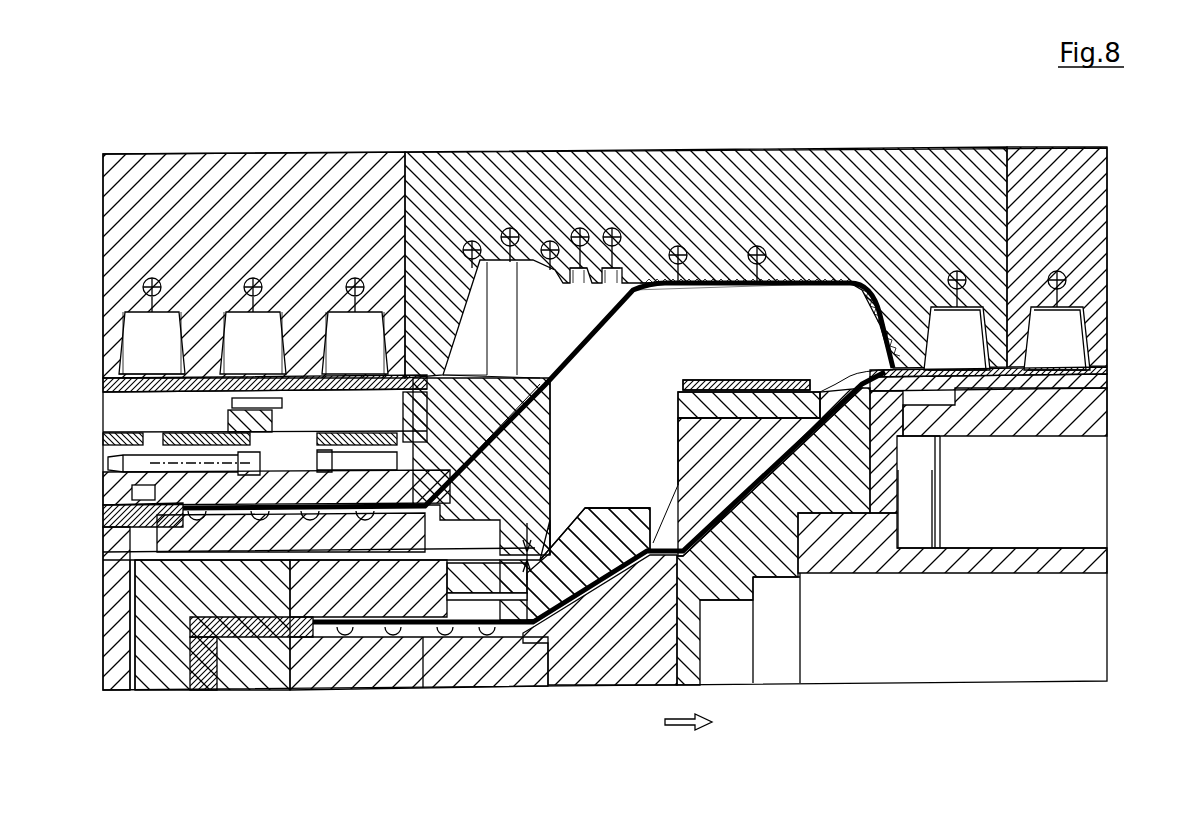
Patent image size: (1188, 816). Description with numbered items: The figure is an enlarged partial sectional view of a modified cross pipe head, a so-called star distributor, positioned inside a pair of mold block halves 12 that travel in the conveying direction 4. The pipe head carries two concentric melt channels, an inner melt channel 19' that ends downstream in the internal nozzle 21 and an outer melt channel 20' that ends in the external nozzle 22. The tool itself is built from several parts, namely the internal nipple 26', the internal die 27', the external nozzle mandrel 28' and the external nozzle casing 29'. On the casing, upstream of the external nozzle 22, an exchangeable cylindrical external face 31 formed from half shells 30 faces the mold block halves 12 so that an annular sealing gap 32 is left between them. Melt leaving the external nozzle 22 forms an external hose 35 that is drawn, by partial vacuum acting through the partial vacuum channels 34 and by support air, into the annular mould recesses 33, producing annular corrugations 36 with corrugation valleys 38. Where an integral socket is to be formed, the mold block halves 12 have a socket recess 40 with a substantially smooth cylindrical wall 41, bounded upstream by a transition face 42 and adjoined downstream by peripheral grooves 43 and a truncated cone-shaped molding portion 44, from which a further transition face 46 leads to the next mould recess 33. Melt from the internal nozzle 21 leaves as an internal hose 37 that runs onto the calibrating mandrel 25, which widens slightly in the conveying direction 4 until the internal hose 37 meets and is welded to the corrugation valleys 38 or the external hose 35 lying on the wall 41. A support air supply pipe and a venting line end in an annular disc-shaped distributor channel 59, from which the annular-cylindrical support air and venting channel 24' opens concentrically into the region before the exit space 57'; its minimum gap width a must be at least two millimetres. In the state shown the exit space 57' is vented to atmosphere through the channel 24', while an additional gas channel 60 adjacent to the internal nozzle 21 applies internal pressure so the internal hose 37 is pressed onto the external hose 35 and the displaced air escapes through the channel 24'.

The mold block half 12 is at (697, 175).
The annular mould recess 33 is at (152, 278).
The partial vacuum channel 34 is at (1060, 270).
The annular corrugation 36 is at (1098, 320).
The corrugation valley 38 is at (1100, 370).
The calibrating mandrel 25 is at (1090, 410).
The internal nozzle 21 is at (905, 440).
The additional gas channel 60 is at (870, 380).
The external nozzle casing 29' is at (243, 483).
The half shell 30 is at (104, 386).
The cylindrical external face 31 is at (150, 372).
The outer melt channel 20' is at (465, 405).
The external nozzle 22 is at (540, 378).
The external hose 35 is at (588, 330).
The cylindrical wall 41 is at (782, 281).
The transition face 42 is at (883, 313).
The internal hose 37 is at (872, 370).
The socket recess 40 is at (754, 336).
The transition face 46 is at (445, 300).
The annular sealing gap 32 is at (445, 375).
The truncated cone-shaped molding portion 44 is at (533, 258).
The peripheral groove 43 is at (624, 262).
The exit space 57' is at (706, 467).
The external nozzle mandrel 28' is at (461, 504).
The annular disc-shaped distributor channel 59 is at (131, 640).
The support air and venting channel 24' is at (280, 636).
The inner melt channel 19' is at (195, 698).
The internal die 27' is at (408, 659).
The internal nipple 26' is at (419, 698).
The minimum gap width a is at (520, 548).
The conveying direction 4 is at (678, 727).